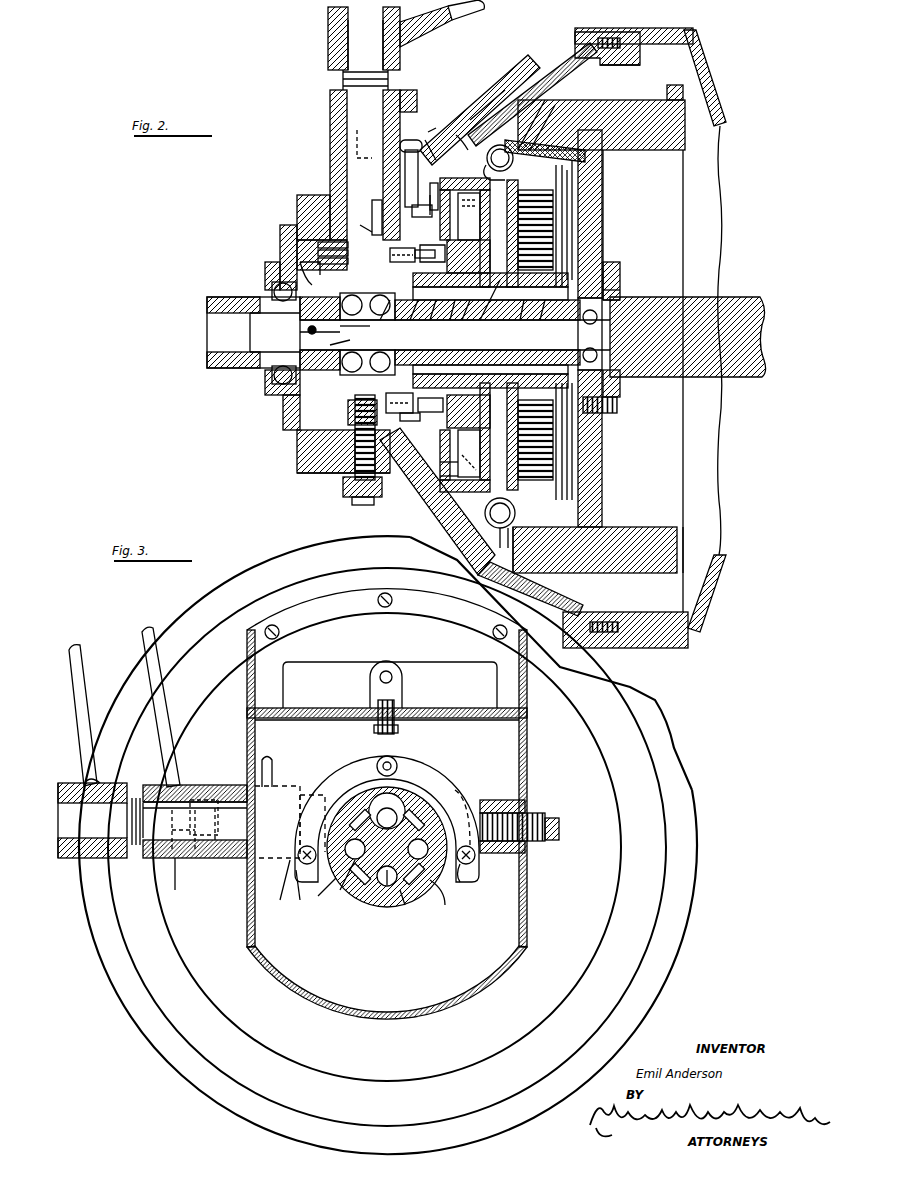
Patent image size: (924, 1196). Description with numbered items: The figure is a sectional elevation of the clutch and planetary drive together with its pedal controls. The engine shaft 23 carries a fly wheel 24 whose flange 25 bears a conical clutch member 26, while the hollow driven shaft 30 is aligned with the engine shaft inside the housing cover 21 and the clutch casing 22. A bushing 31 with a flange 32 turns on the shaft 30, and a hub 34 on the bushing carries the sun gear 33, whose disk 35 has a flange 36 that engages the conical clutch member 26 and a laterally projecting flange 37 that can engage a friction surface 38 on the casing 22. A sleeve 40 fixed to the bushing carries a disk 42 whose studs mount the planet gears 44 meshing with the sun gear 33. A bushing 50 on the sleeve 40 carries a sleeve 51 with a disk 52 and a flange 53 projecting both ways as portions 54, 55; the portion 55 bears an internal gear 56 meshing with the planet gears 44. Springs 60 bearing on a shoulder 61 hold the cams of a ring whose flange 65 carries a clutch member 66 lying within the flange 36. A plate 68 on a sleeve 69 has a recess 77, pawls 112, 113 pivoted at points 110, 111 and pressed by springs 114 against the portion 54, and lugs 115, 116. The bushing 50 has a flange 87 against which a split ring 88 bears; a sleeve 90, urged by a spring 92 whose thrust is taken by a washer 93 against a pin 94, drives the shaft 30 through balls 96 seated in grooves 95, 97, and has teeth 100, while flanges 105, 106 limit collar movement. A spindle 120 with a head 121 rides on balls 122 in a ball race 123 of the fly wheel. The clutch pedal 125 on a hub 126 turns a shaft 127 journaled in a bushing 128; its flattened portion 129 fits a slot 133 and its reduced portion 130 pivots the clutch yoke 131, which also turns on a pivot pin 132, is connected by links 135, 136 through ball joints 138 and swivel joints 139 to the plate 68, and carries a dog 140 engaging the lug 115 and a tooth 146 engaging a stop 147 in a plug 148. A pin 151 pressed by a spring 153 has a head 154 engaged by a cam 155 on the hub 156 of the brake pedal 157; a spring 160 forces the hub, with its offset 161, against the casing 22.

In FIG. 2, the housing cover 21 is at (721, 82).
In FIG. 2, the clutch casing 22 is at (445, 512).
In FIG. 3, the clutch casing 22 is at (605, 835).
In FIG. 2, the engine shaft 23 is at (748, 297).
In FIG. 2, the fly wheel 24 is at (603, 195).
In FIG. 2, the flange 25 is at (597, 60).
In FIG. 2, the conical clutch member 26 is at (585, 112).
In FIG. 2, the driven shaft 30 is at (250, 368).
In FIG. 2, the bushing 31 is at (463, 322).
In FIG. 2, the flange 32 is at (612, 275).
In FIG. 2, the sun gear 33 is at (592, 248).
In FIG. 2, the hub 34 is at (580, 315).
In FIG. 2, the disk 35 is at (562, 190).
In FIG. 2, the flange 36 is at (560, 125).
In FIG. 2, the laterally projecting flange 37 is at (540, 118).
In FIG. 2, the friction surface 38 is at (500, 85).
In FIG. 2, the sleeve 40 is at (518, 318).
In FIG. 2, the flange or disk 42 is at (560, 230).
In FIG. 2, the planet gears 44 is at (542, 322).
In FIG. 2, the bushing 50 is at (448, 319).
In FIG. 2, the sleeve 51 is at (431, 318).
In FIG. 2, the flange or disk 52 is at (470, 178).
In FIG. 2, the flange 53 is at (496, 160).
In FIG. 2, the flange portion 54 is at (450, 180).
In FIG. 2, the flange portion 55 is at (567, 180).
In FIG. 2, the internal gear 56 is at (545, 205).
In FIG. 2, the springs 60 is at (490, 148).
In FIG. 2, the shoulder 61 is at (486, 505).
In FIG. 2, the peripherally extending flange 65 is at (572, 170).
In FIG. 2, the clutch member 66 is at (540, 140).
In FIG. 2, the plate 68 is at (490, 433).
In FIG. 2, the sleeve 69 is at (486, 309).
In FIG. 2, the recess 77 is at (469, 216).
In FIG. 2, the flange 87 is at (410, 431).
In FIG. 3, the flange 87 is at (447, 912).
In FIG. 2, the collar or split ring 88 is at (399, 412).
In FIG. 3, the collar or split ring 88 is at (436, 895).
In FIG. 2, the sleeve 90 is at (283, 262).
In FIG. 2, the spring 92 is at (285, 415).
In FIG. 3, the spring 92 is at (404, 900).
In FIG. 2, the washer or ring 93 is at (290, 395).
In FIG. 2, the pin 94 is at (308, 333).
In FIG. 2, the grooves 95 is at (350, 329).
In FIG. 3, the grooves 95 is at (380, 888).
In FIG. 2, the balls 96 is at (300, 325).
In FIG. 3, the balls 96 is at (384, 890).
In FIG. 2, the grooves 97 is at (341, 342).
In FIG. 3, the grooves 97 is at (352, 882).
In FIG. 3, the teeth 100 is at (412, 880).
In FIG. 2, the inwardly extending flange 105 is at (411, 321).
In FIG. 2, the outwardly extending flange 106 is at (384, 320).
In FIG. 2, the pivot point 110 is at (426, 212).
In FIG. 2, the pivot point 111 is at (440, 462).
In FIG. 2, the pawl 112 is at (437, 192).
In FIG. 2, the pawl 113 is at (440, 476).
In FIG. 2, the springs 114 is at (425, 488).
In FIG. 2, the lug 115 is at (424, 243).
In FIG. 3, the lug 115 is at (273, 886).
In FIG. 2, the lug 116 is at (376, 208).
In FIG. 3, the lug 116 is at (268, 757).
In FIG. 2, the spindle 120 is at (618, 402).
In FIG. 2, the head 121 is at (622, 376).
In FIG. 2, the balls 122 is at (645, 305).
In FIG. 2, the ball race 123 is at (618, 295).
In FIG. 2, the clutch pedal 125 is at (452, 18).
In FIG. 3, the clutch pedal 125 is at (83, 678).
In FIG. 2, the hub 126 is at (330, 30).
In FIG. 3, the hub 126 is at (98, 858).
In FIG. 2, the shaft 127 is at (356, 48).
In FIG. 3, the shaft 127 is at (150, 858).
In FIG. 2, the bushing 128 is at (297, 190).
In FIG. 3, the bushing 128 is at (236, 858).
In FIG. 2, the flattened portion 129 is at (300, 220).
In FIG. 3, the flattened portion 129 is at (298, 795).
In FIG. 2, the reduced portion 130 is at (332, 255).
In FIG. 3, the reduced portion 130 is at (375, 787).
In FIG. 2, the clutch yoke 131 is at (285, 456).
In FIG. 3, the clutch yoke 131 is at (440, 770).
In FIG. 2, the pivot pin 132 is at (300, 470).
In FIG. 3, the pivot pin 132 is at (470, 790).
In FIG. 2, the recess or slot 133 is at (332, 244).
In FIG. 3, the recess or slot 133 is at (300, 863).
In FIG. 2, the link 135 is at (366, 227).
In FIG. 3, the link 135 is at (324, 896).
In FIG. 2, the link 136 is at (352, 480).
In FIG. 3, the link 136 is at (472, 866).
In FIG. 2, the ball joints 138 is at (350, 410).
In FIG. 3, the ball joints 138 is at (472, 880).
In FIG. 2, the spherical or swivel joints 139 is at (430, 418).
In FIG. 2, the extension or dog 140 is at (404, 243).
In FIG. 3, the extension or dog 140 is at (307, 896).
In FIG. 3, the tooth 146 is at (400, 732).
In FIG. 3, the spring pressed pawl or stop 147 is at (380, 728).
In FIG. 3, the plug 148 is at (420, 722).
In FIG. 2, the pin 151 is at (331, 172).
In FIG. 3, the pin 151 is at (232, 830).
In FIG. 2, the spring 153 is at (398, 150).
In FIG. 3, the spring 153 is at (200, 858).
In FIG. 2, the head 154 is at (420, 135).
In FIG. 3, the head 154 is at (180, 830).
In FIG. 2, the cam 155 is at (436, 128).
In FIG. 3, the cam 155 is at (195, 800).
In FIG. 2, the hub 156 is at (418, 78).
In FIG. 3, the hub 156 is at (183, 885).
In FIG. 2, the brake pedal 157 is at (512, 50).
In FIG. 3, the brake pedal 157 is at (142, 634).
In FIG. 2, the spring 160 is at (343, 84).
In FIG. 3, the spring 160 is at (138, 795).
In FIG. 2, the offset 161 is at (361, 137).